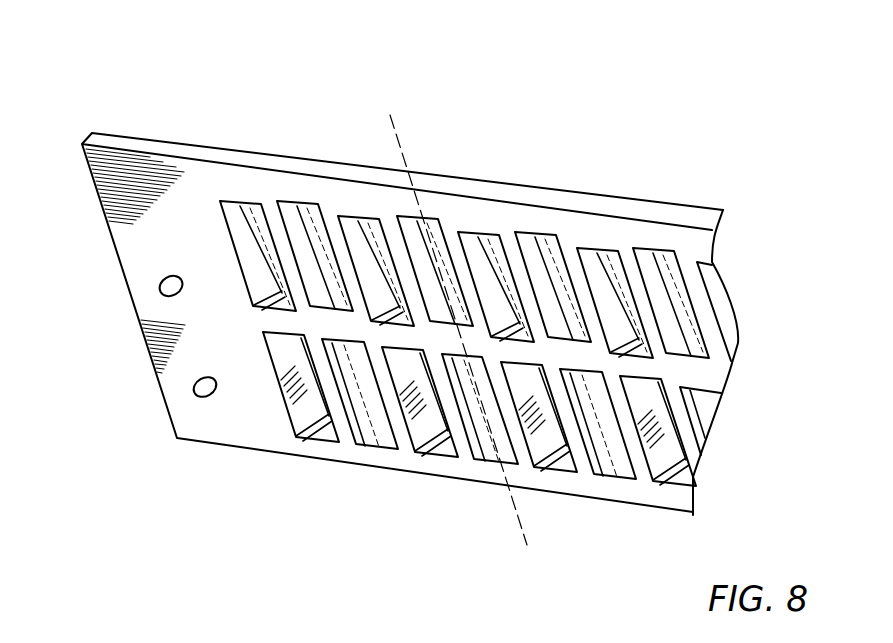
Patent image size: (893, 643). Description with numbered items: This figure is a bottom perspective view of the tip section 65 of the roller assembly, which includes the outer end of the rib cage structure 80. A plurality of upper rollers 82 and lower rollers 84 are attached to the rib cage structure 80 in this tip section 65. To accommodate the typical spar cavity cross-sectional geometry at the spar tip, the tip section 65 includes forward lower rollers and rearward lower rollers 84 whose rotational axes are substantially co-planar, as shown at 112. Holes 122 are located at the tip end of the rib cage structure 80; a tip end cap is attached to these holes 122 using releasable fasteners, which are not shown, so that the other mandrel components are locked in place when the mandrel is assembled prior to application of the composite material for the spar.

The tip section 65 is at (152, 449).
The rib cage structure 80 is at (242, 188).
The upper rollers 82 is at (368, 228).
The lower rollers 84 is at (312, 216).
The co-planar rotational axes of lower rollers 112 is at (506, 528).
The holes 122 is at (158, 281).